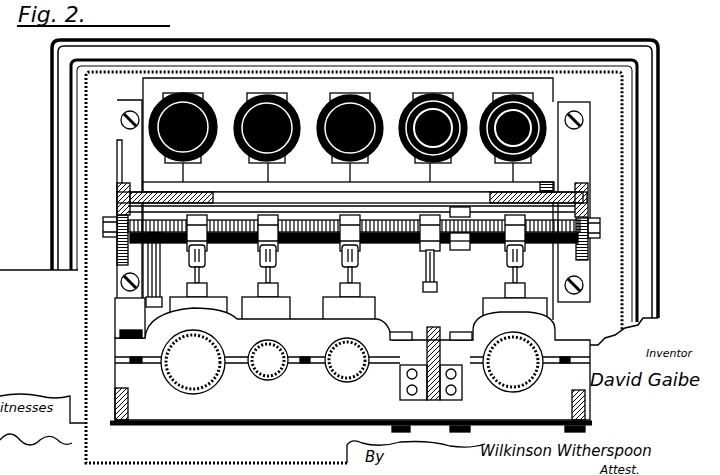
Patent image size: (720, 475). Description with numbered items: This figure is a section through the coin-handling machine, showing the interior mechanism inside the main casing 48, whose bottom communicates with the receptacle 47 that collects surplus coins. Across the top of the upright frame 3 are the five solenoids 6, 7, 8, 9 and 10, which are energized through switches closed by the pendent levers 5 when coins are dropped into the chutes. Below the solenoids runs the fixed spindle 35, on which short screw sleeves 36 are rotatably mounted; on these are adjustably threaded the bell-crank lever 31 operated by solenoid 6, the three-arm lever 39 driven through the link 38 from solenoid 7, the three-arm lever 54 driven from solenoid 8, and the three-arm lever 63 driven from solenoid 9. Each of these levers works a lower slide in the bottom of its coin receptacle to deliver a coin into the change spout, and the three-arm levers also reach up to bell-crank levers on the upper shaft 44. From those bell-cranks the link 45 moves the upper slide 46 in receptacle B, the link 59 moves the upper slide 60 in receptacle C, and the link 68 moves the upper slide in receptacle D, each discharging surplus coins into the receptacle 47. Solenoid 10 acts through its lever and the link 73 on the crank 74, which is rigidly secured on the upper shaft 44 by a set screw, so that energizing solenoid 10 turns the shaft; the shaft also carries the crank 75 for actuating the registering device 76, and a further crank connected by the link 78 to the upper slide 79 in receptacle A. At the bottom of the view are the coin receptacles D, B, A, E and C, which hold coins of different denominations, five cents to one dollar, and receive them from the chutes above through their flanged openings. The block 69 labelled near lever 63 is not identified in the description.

The receptacle 47 is at (395, 0).
The main casing 48 is at (85, 108).
The solenoid 9 is at (206, 108).
The solenoid 7 is at (292, 106).
The solenoid 6 is at (375, 106).
The solenoid 10 is at (456, 104).
The solenoid 8 is at (535, 106).
The three-arm lever 63 is at (200, 190).
The three-arm lever 39 is at (285, 185).
The bell-crank lever 31 is at (365, 188).
The three-arm lever 54 is at (518, 193).
The pendent lever 5 is at (117, 193).
The link 38 is at (198, 228).
The short screw sleeve 36 is at (380, 229).
The fixed spindle 35 is at (598, 228).
The registering device 76 is at (2, 270).
The crank 75 is at (155, 266).
The link 68 is at (203, 266).
The block 69 is at (222, 303).
The link 45 is at (273, 278).
The upper slide 46 is at (293, 305).
The link 78 is at (356, 282).
The upper slide 79 is at (370, 305).
The crank 74 is at (425, 265).
The link 73 is at (432, 300).
The upper shaft 44 is at (488, 250).
The link 59 is at (520, 278).
The upper slide 60 is at (547, 307).
The upright frame 3 is at (113, 423).
The coin receptacle D is at (198, 386).
The coin receptacle B is at (266, 383).
The coin receptacle A is at (333, 382).
The coin receptacle E is at (425, 378).
The coin receptacle C is at (495, 380).